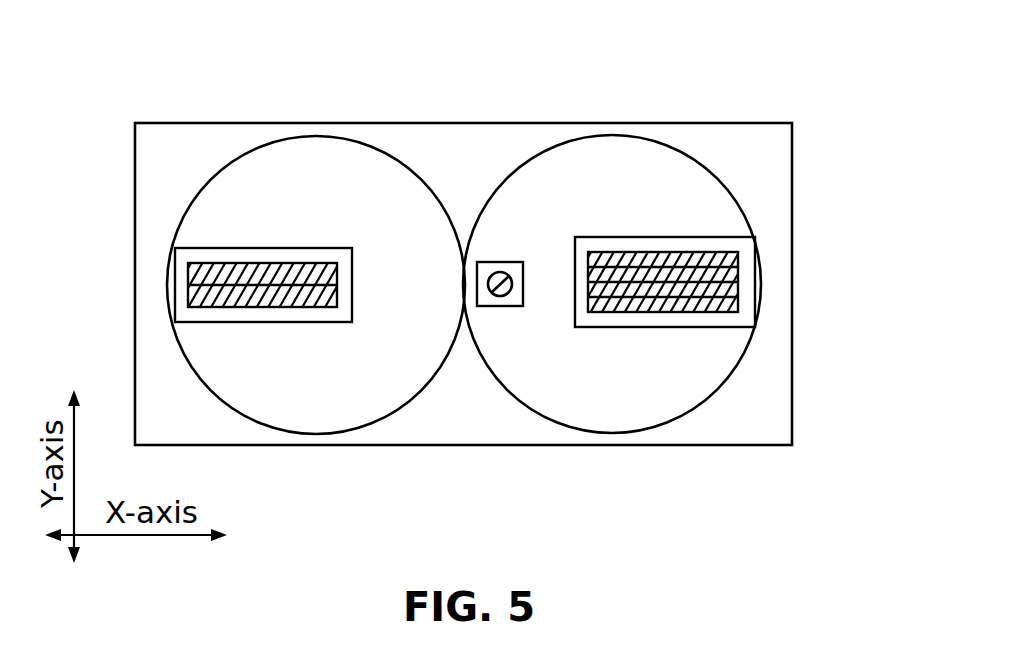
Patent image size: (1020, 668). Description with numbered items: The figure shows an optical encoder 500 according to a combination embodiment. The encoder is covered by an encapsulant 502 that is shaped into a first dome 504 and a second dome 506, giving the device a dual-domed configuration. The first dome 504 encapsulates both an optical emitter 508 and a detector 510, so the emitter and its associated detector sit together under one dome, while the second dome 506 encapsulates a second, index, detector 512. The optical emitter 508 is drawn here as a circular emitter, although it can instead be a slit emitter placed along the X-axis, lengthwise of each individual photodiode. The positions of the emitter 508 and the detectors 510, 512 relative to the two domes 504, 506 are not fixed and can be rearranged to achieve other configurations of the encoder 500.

The optical encoder 500 is at (820, 122).
The encapsulant 502 is at (552, 387).
The first dome 504 is at (702, 164).
The second dome 506 is at (225, 167).
The optical emitter 508 is at (500, 272).
The detector 510 is at (688, 305).
The index detector 512 is at (284, 275).